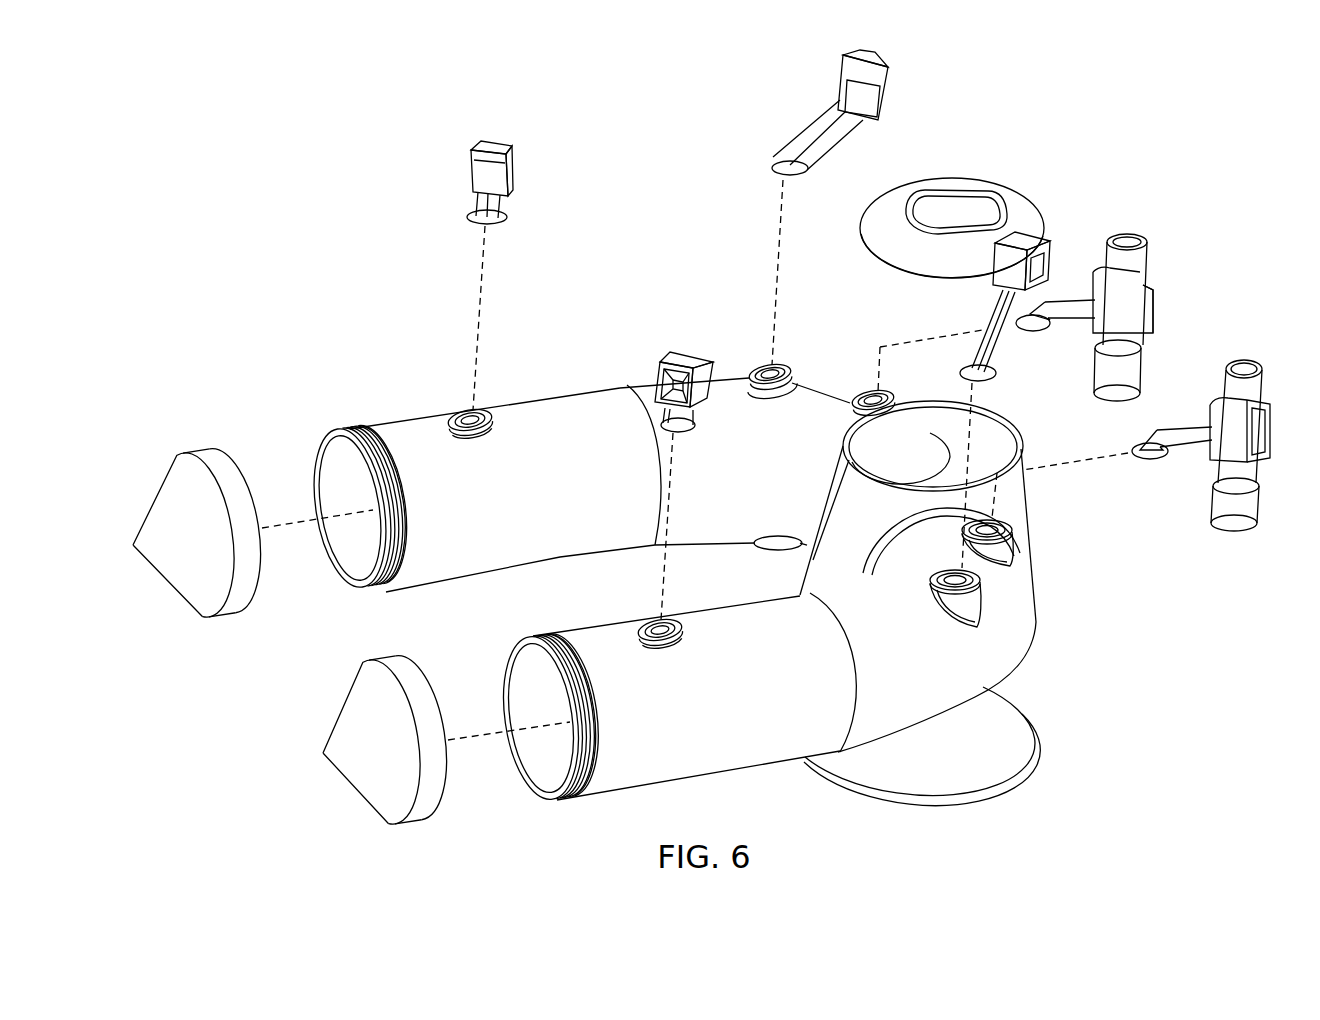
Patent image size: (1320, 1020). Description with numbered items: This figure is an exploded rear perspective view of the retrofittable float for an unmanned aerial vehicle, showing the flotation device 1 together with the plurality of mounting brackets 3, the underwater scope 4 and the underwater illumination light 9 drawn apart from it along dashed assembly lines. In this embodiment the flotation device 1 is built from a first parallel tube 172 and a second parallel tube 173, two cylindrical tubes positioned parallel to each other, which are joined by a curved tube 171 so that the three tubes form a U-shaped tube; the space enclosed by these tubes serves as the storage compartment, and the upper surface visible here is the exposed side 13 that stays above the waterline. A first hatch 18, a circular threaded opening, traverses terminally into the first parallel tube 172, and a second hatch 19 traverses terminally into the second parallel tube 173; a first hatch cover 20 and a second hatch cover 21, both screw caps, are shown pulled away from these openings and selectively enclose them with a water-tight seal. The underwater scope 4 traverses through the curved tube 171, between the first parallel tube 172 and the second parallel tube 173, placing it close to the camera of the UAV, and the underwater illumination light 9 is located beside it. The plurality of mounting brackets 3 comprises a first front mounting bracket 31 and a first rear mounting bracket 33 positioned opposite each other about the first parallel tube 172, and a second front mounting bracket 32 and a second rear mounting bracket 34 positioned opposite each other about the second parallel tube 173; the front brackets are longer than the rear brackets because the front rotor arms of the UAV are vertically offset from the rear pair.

The flotation device 1 is at (431, 400).
The plurality of mounting brackets 3 is at (549, 103).
The underwater scope 4 is at (1038, 546).
The underwater illumination light 9 is at (1215, 497).
The exposed side 13 is at (815, 628).
The first hatch 18 is at (526, 718).
The second hatch 19 is at (331, 507).
The first hatch cover 20 is at (340, 725).
The second hatch cover 21 is at (166, 484).
The first front mounting bracket 31 is at (1000, 355).
The second front mounting bracket 32 is at (813, 132).
The first rear mounting bracket 33 is at (683, 355).
The second rear mounting bracket 34 is at (487, 145).
The curved tube 171 is at (1003, 664).
The first parallel tube 172 is at (746, 608).
The second parallel tube 173 is at (566, 403).